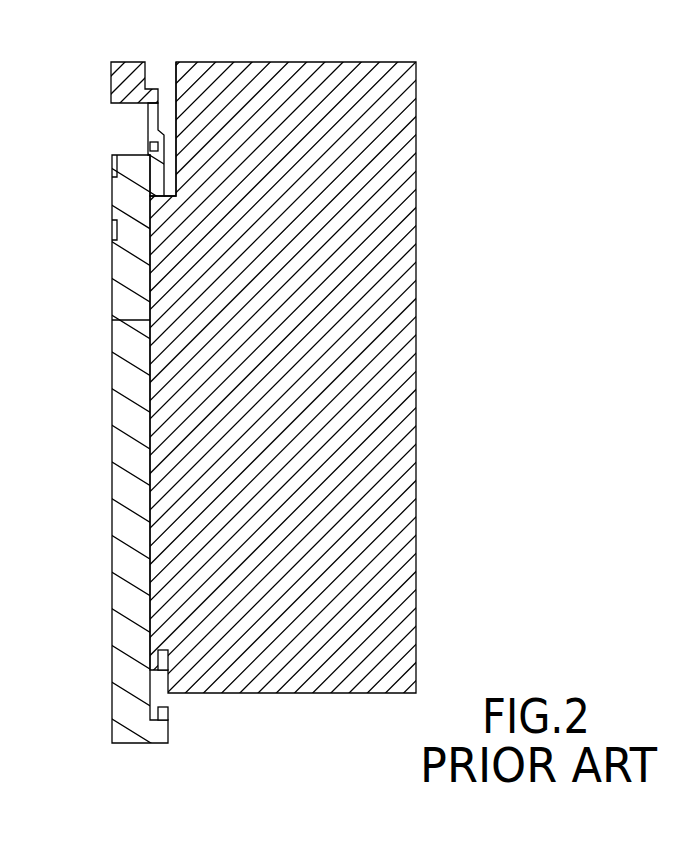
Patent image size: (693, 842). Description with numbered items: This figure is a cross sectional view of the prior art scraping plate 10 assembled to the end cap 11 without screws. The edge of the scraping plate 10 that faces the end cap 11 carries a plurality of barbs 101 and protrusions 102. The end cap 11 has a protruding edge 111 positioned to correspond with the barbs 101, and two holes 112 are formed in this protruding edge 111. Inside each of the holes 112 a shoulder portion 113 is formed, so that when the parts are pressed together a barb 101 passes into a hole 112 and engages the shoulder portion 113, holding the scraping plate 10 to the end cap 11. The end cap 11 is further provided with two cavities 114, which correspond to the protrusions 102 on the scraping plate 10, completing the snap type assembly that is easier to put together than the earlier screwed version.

The scraping plate 10 is at (110, 515).
The end cap 11 is at (407, 150).
The barb 101 is at (158, 147).
The protrusion 102 is at (167, 713).
The protruding edge 111 is at (118, 82).
The hole 112 is at (168, 72).
The shoulder portion 113 is at (164, 91).
The cavity 114 is at (167, 662).